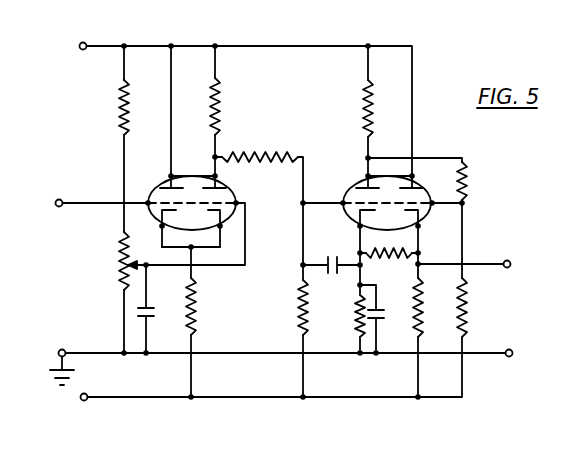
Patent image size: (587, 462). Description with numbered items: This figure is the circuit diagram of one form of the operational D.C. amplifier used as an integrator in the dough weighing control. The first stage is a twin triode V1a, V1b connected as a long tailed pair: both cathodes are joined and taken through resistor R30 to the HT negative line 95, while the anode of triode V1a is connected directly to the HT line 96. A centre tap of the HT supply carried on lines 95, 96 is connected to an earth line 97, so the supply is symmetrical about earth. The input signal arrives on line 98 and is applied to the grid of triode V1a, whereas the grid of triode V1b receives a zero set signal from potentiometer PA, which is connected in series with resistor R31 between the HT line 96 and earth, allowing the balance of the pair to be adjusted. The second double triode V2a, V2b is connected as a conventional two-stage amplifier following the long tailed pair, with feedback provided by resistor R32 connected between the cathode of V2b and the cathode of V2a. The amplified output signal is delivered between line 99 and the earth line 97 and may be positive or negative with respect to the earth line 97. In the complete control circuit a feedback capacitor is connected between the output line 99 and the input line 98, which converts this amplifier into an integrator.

The HT negative line 95 is at (210, 397).
The HT line 96 is at (193, 46).
The earth line 97 is at (240, 353).
The input line 98 is at (72, 203).
The output line 99 is at (487, 263).
The resistor R31 is at (100, 139).
The potentiometer PA is at (114, 292).
The resistor R30 is at (212, 322).
The resistor R32 is at (389, 266).
The triode V1a is at (185, 146).
The triode V1b is at (219, 146).
The triode V2a is at (367, 199).
The triode V2b is at (417, 277).